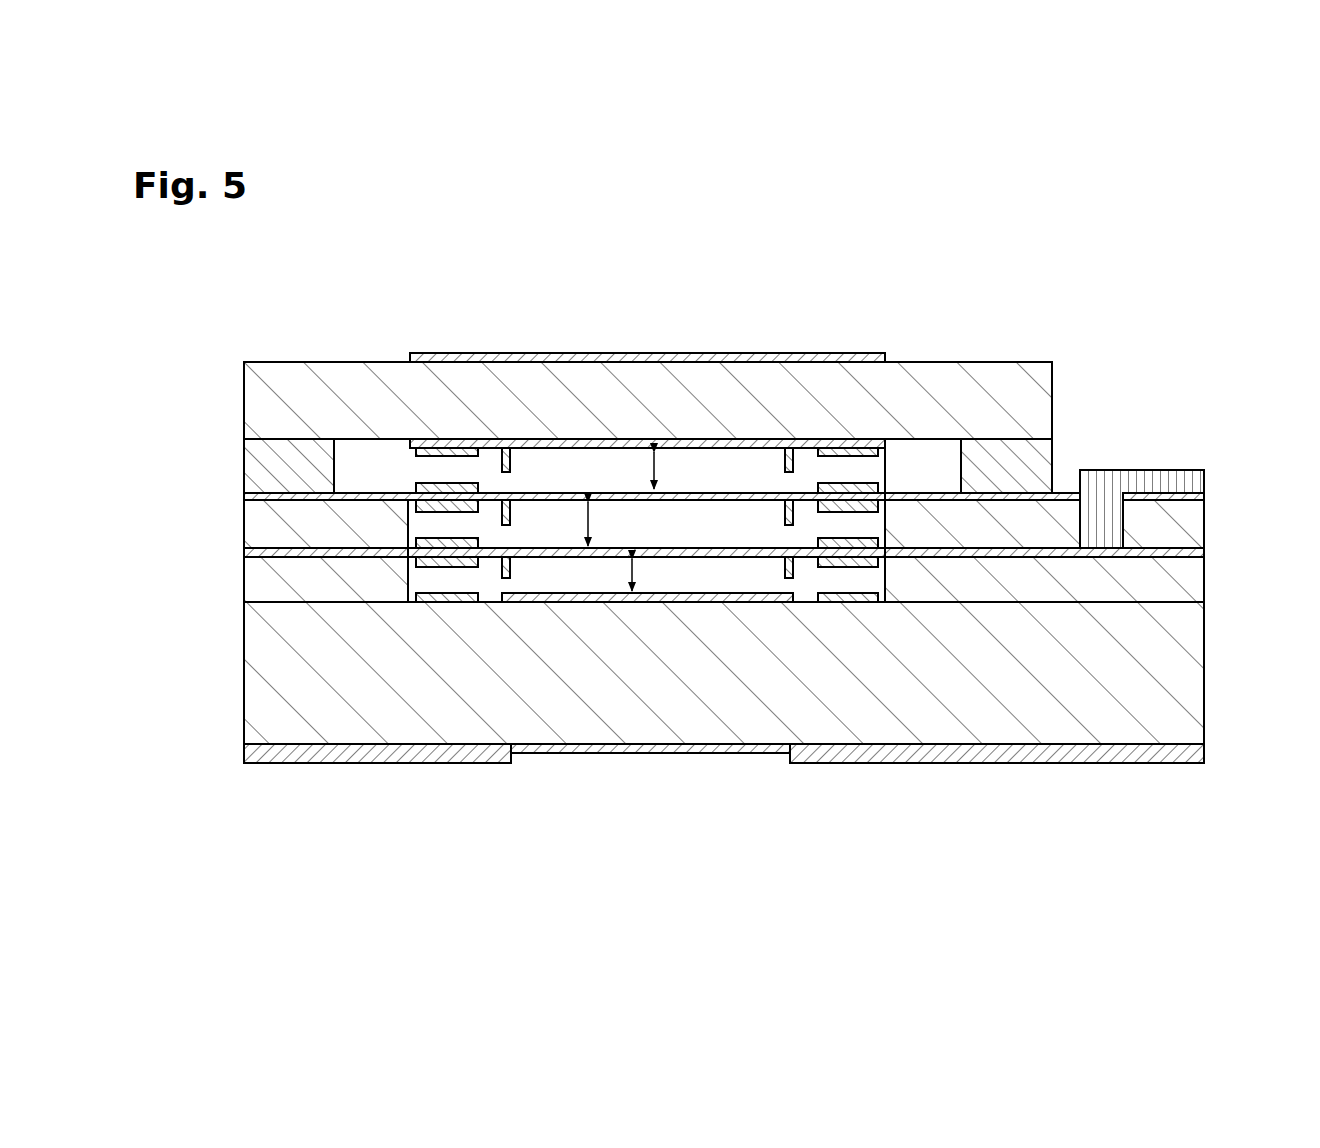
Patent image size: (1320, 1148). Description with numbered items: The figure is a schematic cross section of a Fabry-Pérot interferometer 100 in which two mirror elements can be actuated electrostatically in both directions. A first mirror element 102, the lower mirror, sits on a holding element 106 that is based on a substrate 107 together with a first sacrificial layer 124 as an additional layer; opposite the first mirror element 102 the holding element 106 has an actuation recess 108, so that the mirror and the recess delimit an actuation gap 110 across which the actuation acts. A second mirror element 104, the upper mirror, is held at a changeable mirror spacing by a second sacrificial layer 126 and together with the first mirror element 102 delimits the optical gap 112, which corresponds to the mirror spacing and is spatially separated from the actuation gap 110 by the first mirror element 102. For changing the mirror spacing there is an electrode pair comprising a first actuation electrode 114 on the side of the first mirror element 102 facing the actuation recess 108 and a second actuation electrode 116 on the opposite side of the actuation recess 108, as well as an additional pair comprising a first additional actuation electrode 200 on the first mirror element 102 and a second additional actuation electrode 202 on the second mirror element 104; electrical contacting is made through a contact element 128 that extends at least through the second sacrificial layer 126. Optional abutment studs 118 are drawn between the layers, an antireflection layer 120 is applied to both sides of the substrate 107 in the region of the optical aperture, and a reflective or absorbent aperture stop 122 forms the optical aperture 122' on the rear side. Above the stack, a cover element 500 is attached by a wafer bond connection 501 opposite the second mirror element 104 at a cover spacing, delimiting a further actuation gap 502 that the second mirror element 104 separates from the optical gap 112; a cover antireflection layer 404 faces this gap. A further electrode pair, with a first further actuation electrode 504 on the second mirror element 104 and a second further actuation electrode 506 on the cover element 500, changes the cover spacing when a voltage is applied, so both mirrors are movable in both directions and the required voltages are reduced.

The interferometer 100 is at (250, 320).
The first mirror element 102 is at (1192, 552).
The second mirror element 104 is at (262, 494).
The holding element 106 is at (172, 758).
The substrate 107 is at (264, 694).
The actuation recess 108 is at (873, 578).
The actuation gap 110 is at (606, 603).
The optical gap 112 is at (590, 524).
The first actuation electrode 114 is at (460, 602).
The second actuation electrode 116 is at (433, 602).
The abutment studs 118 is at (516, 570).
The antireflection layer 120 is at (720, 608).
The aperture stop 122 is at (724, 788).
The optical aperture 122' is at (650, 788).
The first sacrificial layer 124 is at (264, 572).
The second sacrificial layer 126 is at (262, 522).
The contact element 128 is at (1180, 482).
The first additional actuation electrode 200 is at (460, 600).
The second additional actuation electrode 202 is at (465, 600).
The cover antireflection layer 404 is at (657, 455).
The cover element 500 is at (262, 384).
The wafer bond connection 501 is at (262, 455).
The further actuation gap 502 is at (662, 468).
The first further actuation electrode 504 is at (432, 490).
The second further actuation electrode 506 is at (468, 510).